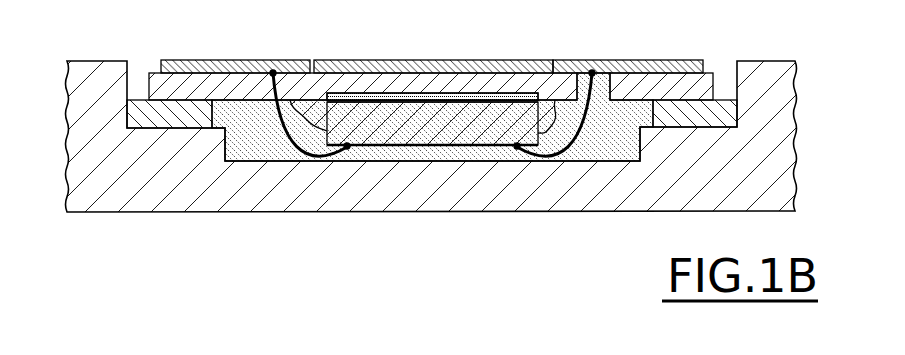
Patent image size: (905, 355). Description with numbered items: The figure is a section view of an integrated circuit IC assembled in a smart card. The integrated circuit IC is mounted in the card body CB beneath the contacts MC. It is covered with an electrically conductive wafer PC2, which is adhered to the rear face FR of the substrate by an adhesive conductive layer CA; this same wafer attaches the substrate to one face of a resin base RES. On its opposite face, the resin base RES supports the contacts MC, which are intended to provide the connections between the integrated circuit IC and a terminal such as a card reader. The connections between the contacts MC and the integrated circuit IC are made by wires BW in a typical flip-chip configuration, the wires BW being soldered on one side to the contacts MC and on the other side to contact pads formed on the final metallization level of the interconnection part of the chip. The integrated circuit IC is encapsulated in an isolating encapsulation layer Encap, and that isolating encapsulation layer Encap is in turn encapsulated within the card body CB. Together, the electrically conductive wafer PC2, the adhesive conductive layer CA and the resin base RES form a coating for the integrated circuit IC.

The card body CB is at (150, 222).
The isolating encapsulation layer Encap is at (270, 151).
The resin base RES is at (487, 94).
The contacts MC is at (660, 56).
The adhesive conductive layer CA is at (547, 99).
The integrated circuit IC is at (422, 123).
The rear face FR is at (378, 96).
The electrically conductive wafer PC2 is at (484, 90).
The wires BW is at (573, 155).